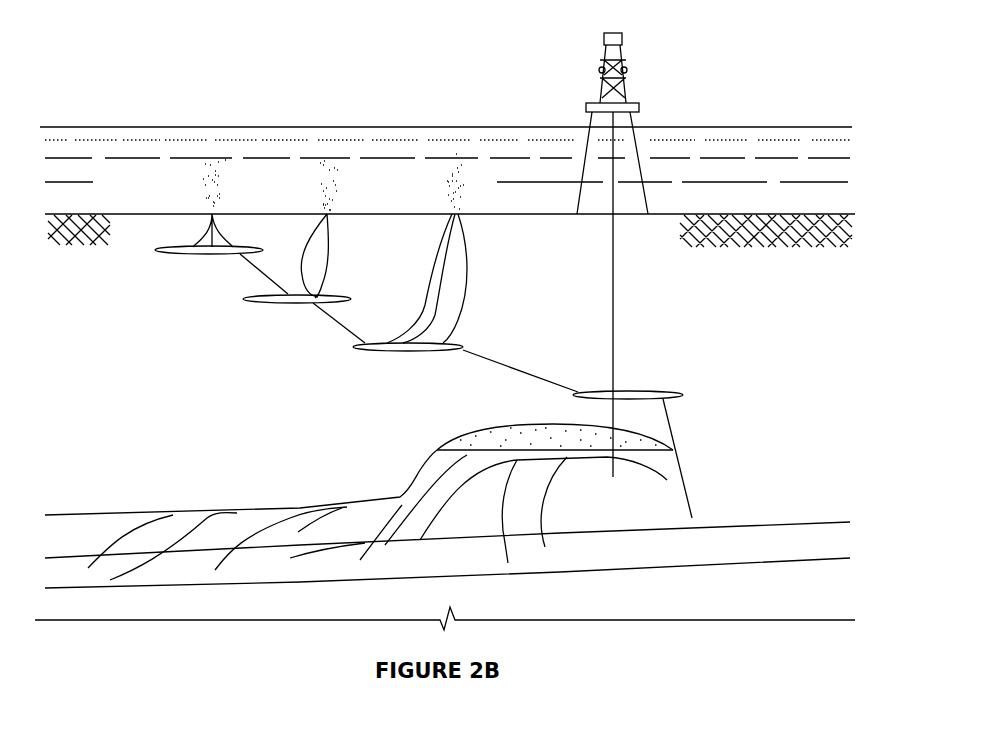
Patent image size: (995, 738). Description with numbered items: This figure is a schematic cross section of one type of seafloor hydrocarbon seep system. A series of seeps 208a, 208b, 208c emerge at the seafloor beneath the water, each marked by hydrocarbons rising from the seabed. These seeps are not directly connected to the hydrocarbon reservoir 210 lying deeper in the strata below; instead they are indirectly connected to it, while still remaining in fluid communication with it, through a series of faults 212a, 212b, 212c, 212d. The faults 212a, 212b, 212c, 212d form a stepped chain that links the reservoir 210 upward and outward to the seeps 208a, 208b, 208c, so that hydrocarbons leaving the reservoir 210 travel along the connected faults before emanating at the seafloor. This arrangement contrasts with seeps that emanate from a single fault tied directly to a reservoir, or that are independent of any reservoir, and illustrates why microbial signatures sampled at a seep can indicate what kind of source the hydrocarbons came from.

The seep 208a is at (198, 189).
The seep 208b is at (327, 190).
The seep 208c is at (447, 190).
The hydrocarbon reservoir 210 is at (473, 437).
The fault 212a is at (670, 422).
The fault 212b is at (488, 363).
The fault 212c is at (340, 323).
The fault 212d is at (262, 269).